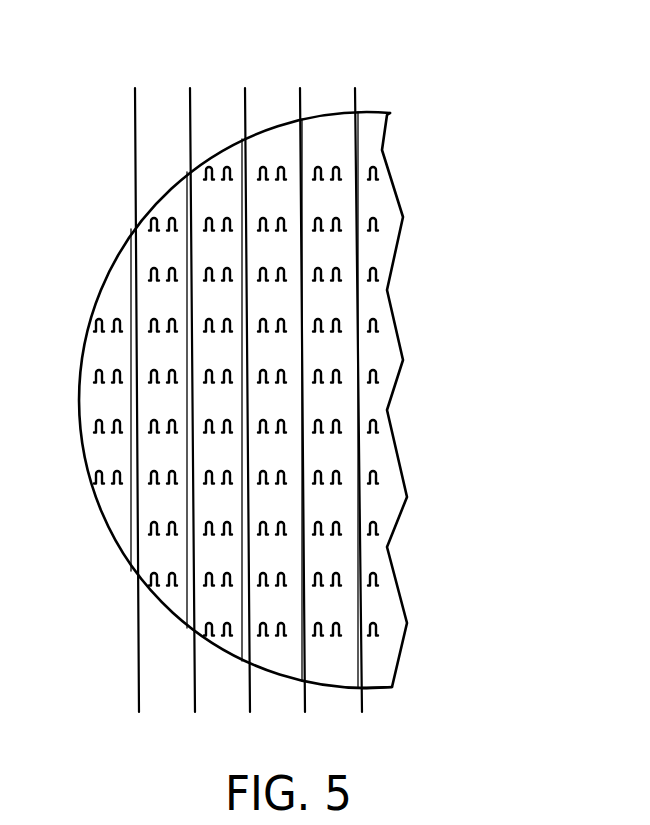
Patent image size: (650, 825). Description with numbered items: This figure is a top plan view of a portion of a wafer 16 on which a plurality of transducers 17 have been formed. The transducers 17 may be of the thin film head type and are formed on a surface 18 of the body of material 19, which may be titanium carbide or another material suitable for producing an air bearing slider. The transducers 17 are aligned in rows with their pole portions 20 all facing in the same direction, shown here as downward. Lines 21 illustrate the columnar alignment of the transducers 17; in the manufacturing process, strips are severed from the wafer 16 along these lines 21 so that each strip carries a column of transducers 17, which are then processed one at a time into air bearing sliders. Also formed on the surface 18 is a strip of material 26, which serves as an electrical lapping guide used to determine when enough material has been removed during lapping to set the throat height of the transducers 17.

The wafer 16 is at (514, 289).
The transducers 17 is at (250, 138).
The surface 18 is at (383, 606).
The body of material 19 is at (338, 688).
The pole portions 20 is at (322, 178).
The lines 21 is at (247, 98).
The strip of material 26 is at (285, 667).